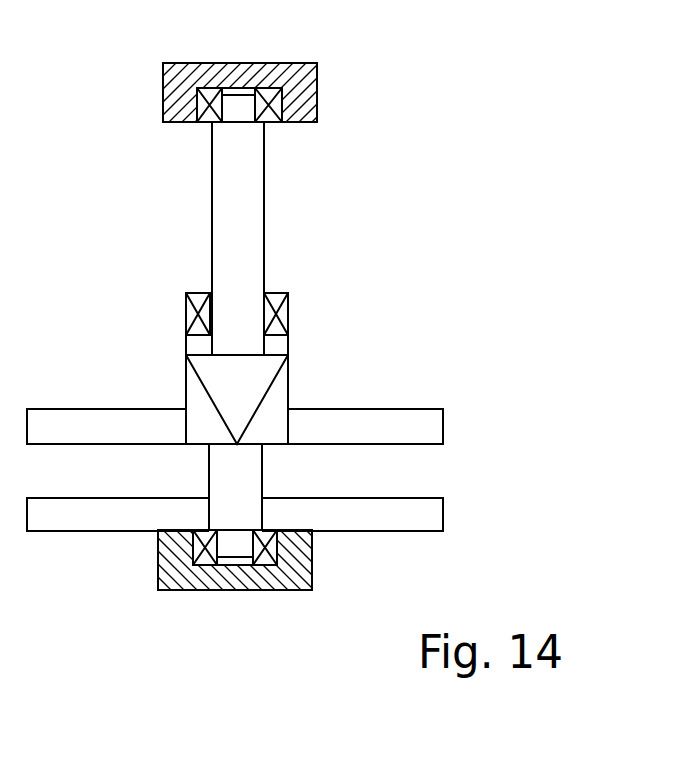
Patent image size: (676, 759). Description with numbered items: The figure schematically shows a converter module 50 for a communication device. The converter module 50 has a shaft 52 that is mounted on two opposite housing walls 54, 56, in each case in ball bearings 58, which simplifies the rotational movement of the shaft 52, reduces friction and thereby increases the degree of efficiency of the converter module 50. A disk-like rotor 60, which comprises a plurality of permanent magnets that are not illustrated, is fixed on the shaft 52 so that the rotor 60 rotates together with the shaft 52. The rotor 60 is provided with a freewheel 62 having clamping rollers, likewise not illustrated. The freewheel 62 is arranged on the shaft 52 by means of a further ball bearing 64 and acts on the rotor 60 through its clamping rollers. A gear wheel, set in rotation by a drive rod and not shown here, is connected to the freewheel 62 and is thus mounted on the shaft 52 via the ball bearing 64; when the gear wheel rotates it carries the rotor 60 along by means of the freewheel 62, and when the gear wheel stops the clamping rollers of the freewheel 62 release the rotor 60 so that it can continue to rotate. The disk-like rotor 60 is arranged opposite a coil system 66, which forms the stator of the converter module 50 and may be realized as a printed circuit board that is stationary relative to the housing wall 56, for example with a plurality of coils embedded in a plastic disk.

The converter module 50 is at (378, 185).
The shaft 52 is at (258, 222).
The housing wall 54 is at (176, 98).
The housing wall 56 is at (177, 582).
The ball bearings 58 is at (276, 101).
The disk-like rotor 60 is at (133, 421).
The freewheel 62 is at (283, 372).
The further ball bearing 64 is at (285, 313).
The coil system 66 is at (142, 515).